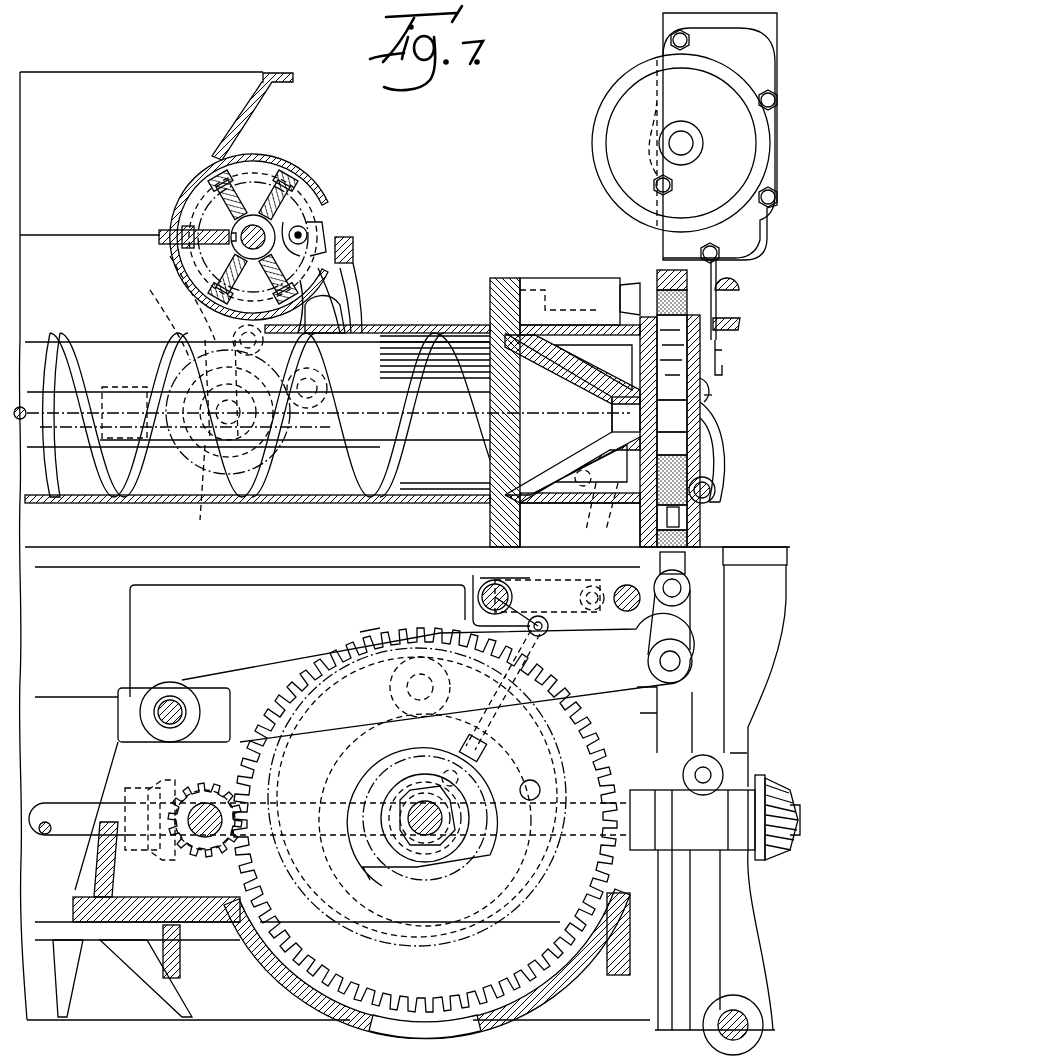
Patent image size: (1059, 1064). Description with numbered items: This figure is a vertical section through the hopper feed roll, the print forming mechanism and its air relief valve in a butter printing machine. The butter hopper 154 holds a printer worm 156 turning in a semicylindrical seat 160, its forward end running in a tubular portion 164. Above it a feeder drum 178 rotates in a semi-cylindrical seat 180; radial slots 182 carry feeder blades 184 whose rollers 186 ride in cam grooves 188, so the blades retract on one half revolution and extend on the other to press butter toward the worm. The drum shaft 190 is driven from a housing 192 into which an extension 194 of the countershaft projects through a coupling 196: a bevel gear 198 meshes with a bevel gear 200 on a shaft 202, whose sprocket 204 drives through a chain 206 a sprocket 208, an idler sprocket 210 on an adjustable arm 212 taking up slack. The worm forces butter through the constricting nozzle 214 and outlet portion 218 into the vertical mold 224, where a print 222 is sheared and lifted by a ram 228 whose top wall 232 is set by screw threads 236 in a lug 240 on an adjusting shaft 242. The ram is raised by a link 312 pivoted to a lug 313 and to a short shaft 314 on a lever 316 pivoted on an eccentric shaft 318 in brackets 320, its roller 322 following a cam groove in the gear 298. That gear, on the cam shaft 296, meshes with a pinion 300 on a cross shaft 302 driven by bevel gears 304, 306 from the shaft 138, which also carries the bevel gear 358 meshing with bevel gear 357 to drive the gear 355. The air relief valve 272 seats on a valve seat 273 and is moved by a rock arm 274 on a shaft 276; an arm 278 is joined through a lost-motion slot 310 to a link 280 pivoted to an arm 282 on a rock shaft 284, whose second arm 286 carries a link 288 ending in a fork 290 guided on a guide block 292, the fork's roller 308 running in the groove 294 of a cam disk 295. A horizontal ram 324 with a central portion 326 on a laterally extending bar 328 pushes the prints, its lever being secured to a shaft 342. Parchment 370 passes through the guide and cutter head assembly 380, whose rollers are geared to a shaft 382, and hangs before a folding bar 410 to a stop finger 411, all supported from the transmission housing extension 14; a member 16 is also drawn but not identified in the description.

The transmission housing extension 14 is at (240, 1005).
The frame wall 16 is at (770, 550).
The shaft 138 is at (65, 800).
The butter hopper 154 is at (240, 78).
The printer worm 156 is at (302, 415).
The semicylindrical seat 160 is at (398, 510).
The tubular portion 164 is at (395, 350).
The feeder drum 178 is at (200, 200).
The semi-cylindrical seat 180 is at (355, 290).
The radial slot 182 is at (255, 160).
The feeder blade 184 is at (295, 170).
The roller 186 is at (353, 255).
The cam groove 188 is at (308, 232).
The shaft 190 is at (270, 225).
The housing 192 is at (355, 310).
The extension 194 is at (36, 342).
The coupling 196 is at (124, 412).
The bevel gear 198 is at (200, 440).
The bevel gear 200 is at (282, 503).
The shaft 202 is at (306, 401).
The sprocket 204 is at (199, 487).
The chain 206 is at (178, 300).
The sprocket 208 is at (200, 335).
The idler sprocket 210 is at (235, 335).
The adjustable arm 212 is at (326, 314).
The constricting nozzle 214 is at (558, 414).
The outlet portion 218 is at (626, 414).
The print 222 is at (657, 283).
The vertical mold 224 is at (725, 372).
The ram 228 is at (608, 418).
The top wall 232 is at (640, 360).
The screw thread 236 is at (690, 468).
The lug 240 is at (688, 515).
The adjusting shaft 242 is at (700, 532).
The air relief valve 272 is at (673, 373).
The valve seat 273 is at (712, 395).
The rock arm 274 is at (718, 430).
The shaft 276 is at (716, 490).
The arm 278 is at (572, 470).
The link 280 is at (595, 524).
The arm 282 is at (543, 582).
The rock shaft 284 is at (495, 580).
The second arm 286 is at (522, 608).
The link 288 is at (540, 655).
The fork 290 is at (355, 750).
The guide block 292 is at (422, 870).
The groove 294 is at (417, 797).
The cam disk 295 is at (520, 880).
The cam shaft 296 is at (462, 860).
The gear 298 is at (365, 630).
The pinion 300 is at (215, 782).
The cross shaft 302 is at (200, 830).
The bevel gear 304 is at (218, 848).
The bevel gear 306 is at (170, 780).
The roller 308 is at (485, 752).
The slot 310 is at (575, 476).
The link 312 is at (691, 622).
The lug 313 is at (680, 567).
The short shaft 314 is at (682, 660).
The lever 316 is at (275, 660).
The eccentric shaft 318 is at (172, 705).
The bracket 320 is at (120, 745).
The roller 322 is at (425, 660).
The horizontal ram 324 is at (615, 288).
The central portion 326 is at (572, 364).
The laterally extending bar 328 is at (540, 285).
The shaft 342 is at (627, 585).
The gear 355 is at (780, 815).
The bevel gear 357 is at (785, 860).
The bevel gear 358 is at (770, 778).
The parchment 370 is at (720, 305).
The guide and cutter head assembly 380 is at (668, 45).
The shaft 382 is at (682, 140).
The parchment folding bar 410 is at (742, 325).
The stop finger 411 is at (747, 400).